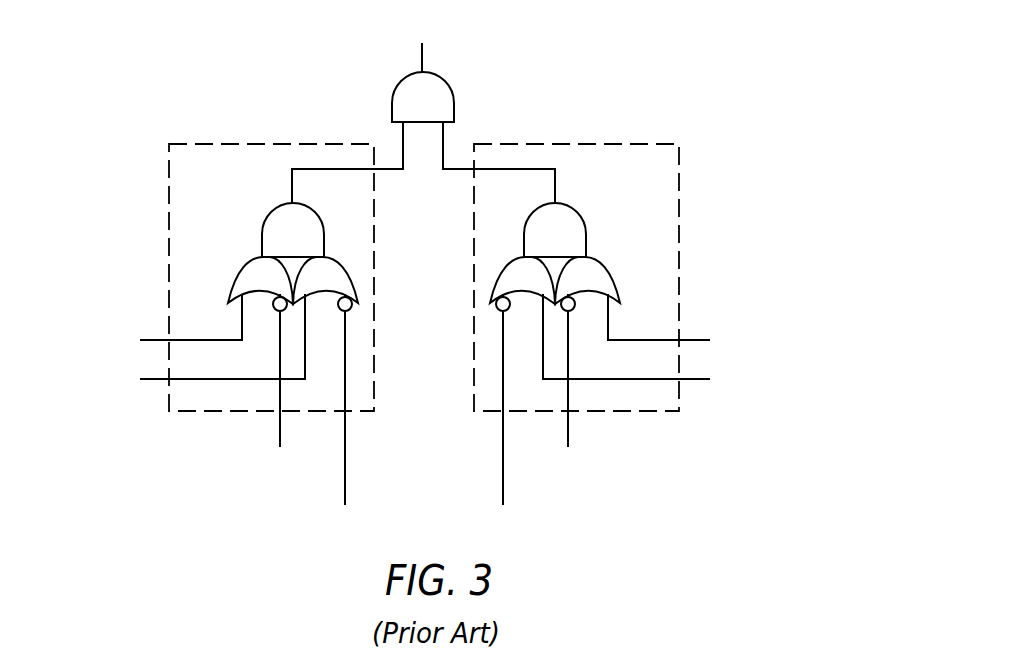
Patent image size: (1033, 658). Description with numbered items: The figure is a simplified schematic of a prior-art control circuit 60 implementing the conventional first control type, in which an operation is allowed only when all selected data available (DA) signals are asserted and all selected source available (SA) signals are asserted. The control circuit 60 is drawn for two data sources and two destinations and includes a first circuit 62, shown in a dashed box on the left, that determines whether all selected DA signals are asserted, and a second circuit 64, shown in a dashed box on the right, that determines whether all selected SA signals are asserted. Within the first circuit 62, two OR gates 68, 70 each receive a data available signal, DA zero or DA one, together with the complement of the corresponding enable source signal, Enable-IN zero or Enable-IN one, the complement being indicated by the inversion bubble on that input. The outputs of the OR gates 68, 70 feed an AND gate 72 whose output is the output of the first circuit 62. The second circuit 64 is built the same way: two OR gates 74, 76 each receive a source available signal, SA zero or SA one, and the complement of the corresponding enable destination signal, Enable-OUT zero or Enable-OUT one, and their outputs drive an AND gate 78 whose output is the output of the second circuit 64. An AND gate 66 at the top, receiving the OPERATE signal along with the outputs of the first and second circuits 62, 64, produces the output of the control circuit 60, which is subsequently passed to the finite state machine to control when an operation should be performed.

The control circuit 60 is at (668, 52).
The first circuit 62 is at (169, 174).
The second circuit 64 is at (680, 202).
The AND gate 66 is at (456, 100).
The OR gate 68 is at (348, 268).
The OR gate 70 is at (243, 268).
The AND gate 72 is at (267, 219).
The OR gate 74 is at (614, 276).
The OR gate 76 is at (498, 277).
The AND gate 78 is at (573, 206).